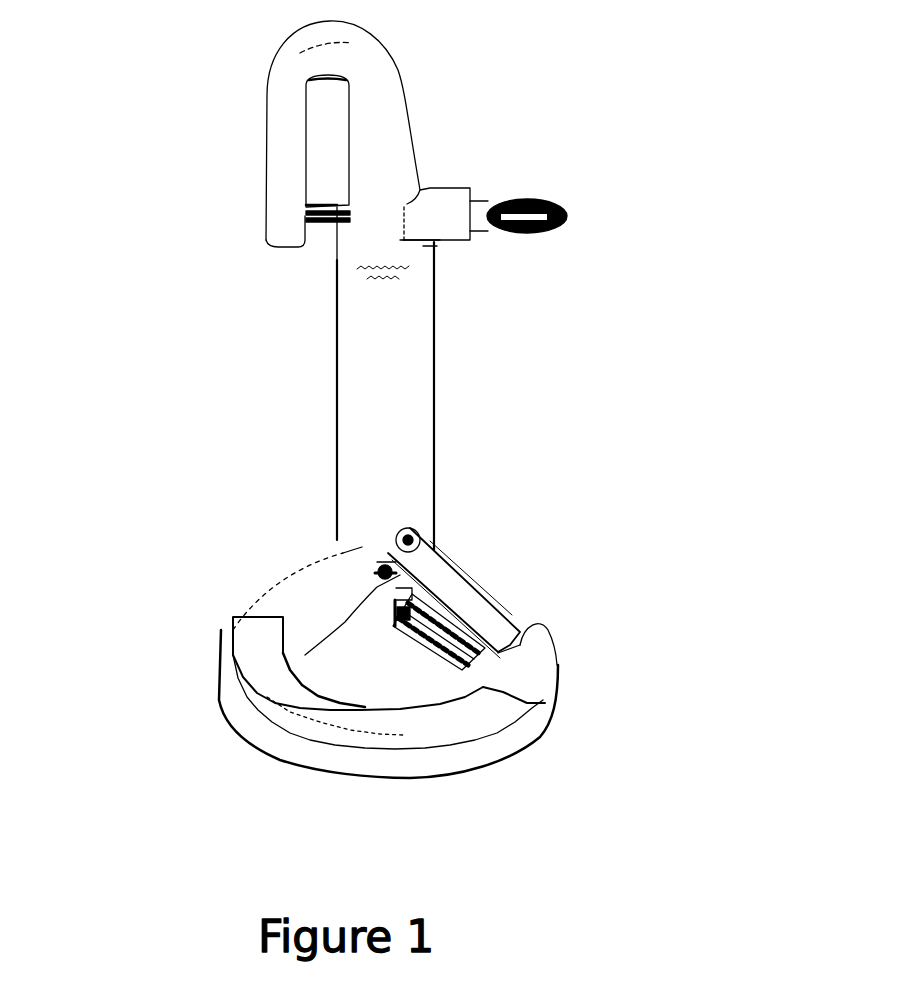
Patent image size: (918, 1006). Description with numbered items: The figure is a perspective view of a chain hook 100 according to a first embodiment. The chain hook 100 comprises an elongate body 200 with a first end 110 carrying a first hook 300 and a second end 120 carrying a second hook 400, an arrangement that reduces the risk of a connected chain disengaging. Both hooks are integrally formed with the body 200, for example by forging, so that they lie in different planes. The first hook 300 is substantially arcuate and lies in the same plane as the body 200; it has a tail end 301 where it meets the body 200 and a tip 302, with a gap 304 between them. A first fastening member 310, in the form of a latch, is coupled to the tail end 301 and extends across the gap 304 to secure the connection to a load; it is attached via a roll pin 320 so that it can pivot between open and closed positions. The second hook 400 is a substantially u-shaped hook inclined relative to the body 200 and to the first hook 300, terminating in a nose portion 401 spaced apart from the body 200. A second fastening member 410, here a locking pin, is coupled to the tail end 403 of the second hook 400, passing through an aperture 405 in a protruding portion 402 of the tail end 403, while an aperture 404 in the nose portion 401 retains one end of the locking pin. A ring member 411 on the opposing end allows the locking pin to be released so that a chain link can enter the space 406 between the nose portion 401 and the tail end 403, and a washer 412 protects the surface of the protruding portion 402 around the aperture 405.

The chain hook 100 is at (604, 401).
The first end 110 is at (359, 495).
The second end 120 is at (359, 288).
The body 200 is at (419, 457).
The first hook 300 is at (556, 703).
The tail end 301 is at (359, 533).
The tip 302 is at (556, 648).
The gap 304 is at (398, 663).
The first fastening member 310 is at (479, 607).
The roll pin 320 is at (393, 572).
The second hook 400 is at (364, 43).
The nose portion 401 is at (264, 232).
The protruding portion 402 is at (443, 237).
The tail end 403 is at (385, 254).
The aperture 404 is at (299, 212).
The aperture 405 is at (481, 233).
The space 406 is at (318, 153).
The second fastening member 410 is at (327, 210).
The ring member 411 is at (560, 208).
The washer 412 is at (482, 192).